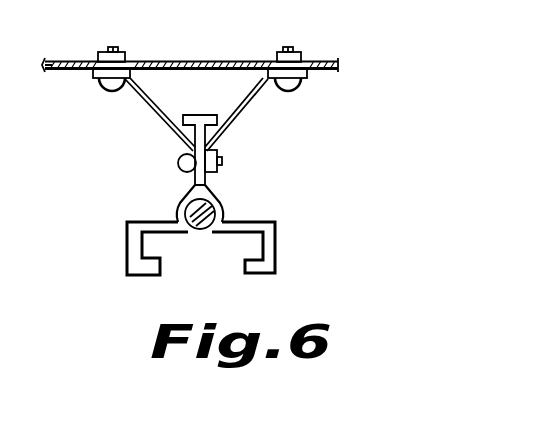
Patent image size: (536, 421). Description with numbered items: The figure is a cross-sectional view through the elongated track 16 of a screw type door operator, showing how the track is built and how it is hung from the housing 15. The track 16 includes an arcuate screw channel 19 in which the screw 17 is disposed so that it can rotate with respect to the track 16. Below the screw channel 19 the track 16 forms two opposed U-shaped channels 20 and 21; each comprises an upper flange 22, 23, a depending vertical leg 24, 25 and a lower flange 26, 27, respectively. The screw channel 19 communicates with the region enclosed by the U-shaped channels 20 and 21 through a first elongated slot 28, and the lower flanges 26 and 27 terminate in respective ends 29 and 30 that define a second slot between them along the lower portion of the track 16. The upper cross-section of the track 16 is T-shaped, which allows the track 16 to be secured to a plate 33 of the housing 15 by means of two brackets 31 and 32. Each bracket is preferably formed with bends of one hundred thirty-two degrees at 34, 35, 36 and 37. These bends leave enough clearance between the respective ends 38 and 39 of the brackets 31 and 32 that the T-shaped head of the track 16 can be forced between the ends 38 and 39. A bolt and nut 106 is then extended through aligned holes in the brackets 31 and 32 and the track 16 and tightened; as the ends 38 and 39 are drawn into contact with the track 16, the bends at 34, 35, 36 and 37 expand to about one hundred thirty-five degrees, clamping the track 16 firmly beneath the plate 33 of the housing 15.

The housing 15 is at (346, 57).
The elongated track 16 is at (306, 213).
The screw 17 is at (212, 212).
The arcuate screw channel 19 is at (265, 222).
The U-shaped channel 20 is at (128, 256).
The U-shaped channel 21 is at (272, 260).
The upper flange 22 is at (143, 222).
The upper flange 23 is at (266, 228).
The depending vertical leg 24 is at (128, 237).
The depending vertical leg 25 is at (276, 248).
The lower flange 26 is at (130, 271).
The lower flange 27 is at (268, 277).
The first elongated slot 28 is at (205, 234).
The end of lower flange 29 is at (161, 274).
The end of lower flange 30 is at (245, 266).
The bracket 31 is at (141, 109).
The bracket 32 is at (258, 116).
The plate 33 is at (225, 58).
The bend 34 is at (122, 84).
The bend 35 is at (190, 150).
The bend 36 is at (276, 84).
The bend 37 is at (218, 152).
The end of bracket 38 is at (193, 185).
The end of bracket 39 is at (208, 186).
The bolt and nut 106 is at (180, 164).